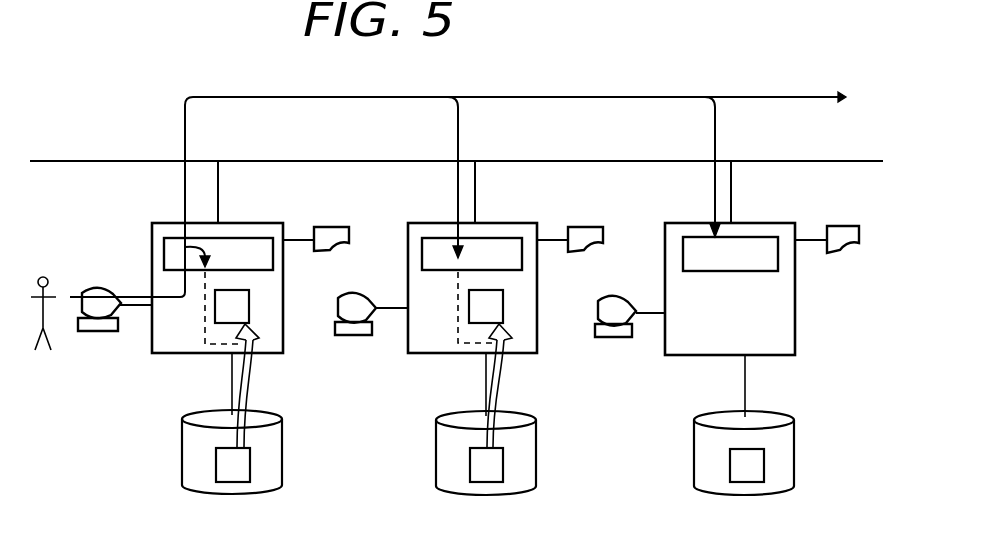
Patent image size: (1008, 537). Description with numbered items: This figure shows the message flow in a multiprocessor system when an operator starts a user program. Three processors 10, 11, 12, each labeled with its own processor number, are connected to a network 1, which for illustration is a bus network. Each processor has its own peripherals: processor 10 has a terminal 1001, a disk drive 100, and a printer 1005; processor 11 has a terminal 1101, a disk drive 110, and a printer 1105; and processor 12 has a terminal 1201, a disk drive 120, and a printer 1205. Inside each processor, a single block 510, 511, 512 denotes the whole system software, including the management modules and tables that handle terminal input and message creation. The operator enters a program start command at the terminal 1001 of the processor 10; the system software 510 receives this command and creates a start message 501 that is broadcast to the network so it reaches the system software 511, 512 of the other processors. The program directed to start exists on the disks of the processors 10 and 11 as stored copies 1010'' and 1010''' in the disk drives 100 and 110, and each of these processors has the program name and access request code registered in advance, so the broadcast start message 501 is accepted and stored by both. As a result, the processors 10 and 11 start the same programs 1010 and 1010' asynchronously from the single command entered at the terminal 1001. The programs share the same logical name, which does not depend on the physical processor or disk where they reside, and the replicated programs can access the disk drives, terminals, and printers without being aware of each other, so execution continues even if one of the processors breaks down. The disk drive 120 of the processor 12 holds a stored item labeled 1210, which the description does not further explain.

The network 1 is at (842, 161).
The start message 501 is at (588, 97).
The processor 10 is at (236, 223).
The processor 11 is at (496, 223).
The processor 12 is at (760, 223).
The system software block 510 is at (168, 247).
The system software block 511 is at (430, 256).
The system software block 512 is at (770, 260).
The printer 1005 is at (336, 228).
The printer 1105 is at (588, 229).
The printer 1205 is at (849, 229).
The terminal 1001 is at (91, 333).
The terminal 1101 is at (350, 337).
The terminal 1201 is at (612, 339).
The program 1010 is at (203, 341).
The program 1010' is at (537, 294).
The program stored on disk 1010'' is at (291, 403).
The program stored on disk 1010''' is at (547, 403).
The disk drive 100 is at (186, 475).
The disk drive 110 is at (442, 479).
The disk drive 120 is at (696, 480).
The file stored in third database 1210 is at (760, 470).